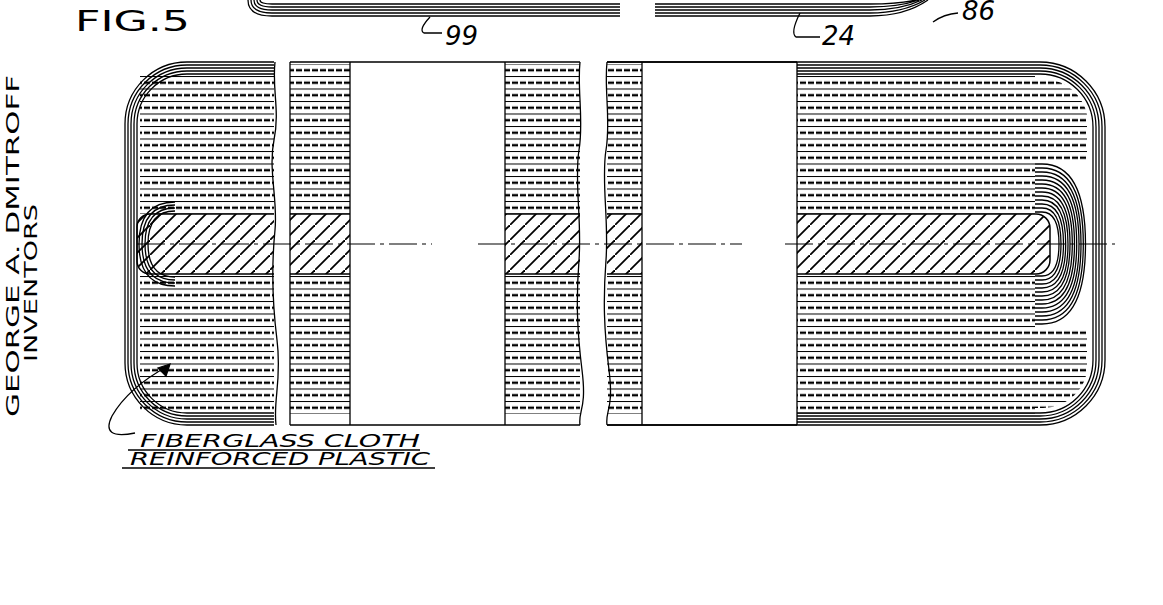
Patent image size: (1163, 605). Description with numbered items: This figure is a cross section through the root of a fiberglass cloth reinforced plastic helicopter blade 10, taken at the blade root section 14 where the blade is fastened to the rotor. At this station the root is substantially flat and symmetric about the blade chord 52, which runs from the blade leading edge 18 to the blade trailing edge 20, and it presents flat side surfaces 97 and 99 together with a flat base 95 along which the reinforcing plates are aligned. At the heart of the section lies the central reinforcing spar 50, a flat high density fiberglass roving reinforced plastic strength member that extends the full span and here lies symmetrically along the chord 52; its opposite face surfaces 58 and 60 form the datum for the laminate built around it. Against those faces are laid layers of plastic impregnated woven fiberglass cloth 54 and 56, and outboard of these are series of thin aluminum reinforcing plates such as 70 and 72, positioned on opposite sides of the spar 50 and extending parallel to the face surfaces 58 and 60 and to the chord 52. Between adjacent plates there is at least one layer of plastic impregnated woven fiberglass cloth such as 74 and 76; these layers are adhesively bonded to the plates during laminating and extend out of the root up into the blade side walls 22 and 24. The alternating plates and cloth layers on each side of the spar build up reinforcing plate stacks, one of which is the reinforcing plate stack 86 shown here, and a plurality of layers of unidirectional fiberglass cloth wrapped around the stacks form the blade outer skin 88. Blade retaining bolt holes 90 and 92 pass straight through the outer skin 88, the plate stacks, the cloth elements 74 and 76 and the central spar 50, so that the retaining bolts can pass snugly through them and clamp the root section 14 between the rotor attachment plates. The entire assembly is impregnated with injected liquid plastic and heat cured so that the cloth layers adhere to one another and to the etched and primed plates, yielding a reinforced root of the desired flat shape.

The helicopter blade 10 is at (128, 82).
The blade root section 14 is at (987, 426).
The blade leading edge 18 is at (125, 246).
The blade trailing edge 20 is at (1098, 243).
The blade side wall 22 is at (907, 67).
The blade side wall 24 is at (525, 418).
The central reinforcing spar 50 is at (797, 245).
The blade chord 52 is at (505, 246).
The layers of plastic impregnated woven fiberglass cloth 54 is at (527, 210).
The layers of plastic impregnated woven fiberglass cloth 56 is at (522, 285).
The face surface of spar 58 is at (345, 205).
The face surface of spar 60 is at (336, 292).
The reinforcing plate 70 is at (1035, 212).
The reinforcing plate 72 is at (1030, 300).
The layer of plastic impregnated woven fiberglass cloth 74 is at (1020, 202).
The layer of plastic impregnated woven fiberglass cloth 76 is at (995, 303).
The reinforcing plate stack 86 is at (832, 387).
The blade outer skin 88 is at (1078, 80).
The blade retaining bolt hole 90 is at (642, 107).
The blade retaining bolt hole 92 is at (506, 139).
The flat base of blade root section 95 is at (695, 15).
The flat side surface 97 is at (312, 62).
The flat side surface 99 is at (555, 427).